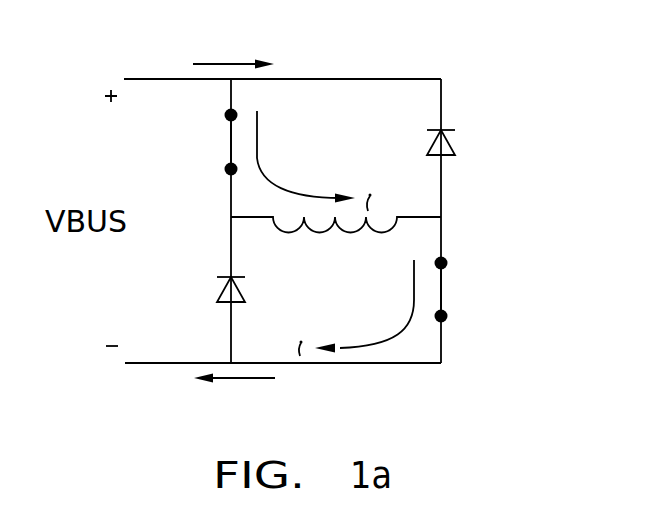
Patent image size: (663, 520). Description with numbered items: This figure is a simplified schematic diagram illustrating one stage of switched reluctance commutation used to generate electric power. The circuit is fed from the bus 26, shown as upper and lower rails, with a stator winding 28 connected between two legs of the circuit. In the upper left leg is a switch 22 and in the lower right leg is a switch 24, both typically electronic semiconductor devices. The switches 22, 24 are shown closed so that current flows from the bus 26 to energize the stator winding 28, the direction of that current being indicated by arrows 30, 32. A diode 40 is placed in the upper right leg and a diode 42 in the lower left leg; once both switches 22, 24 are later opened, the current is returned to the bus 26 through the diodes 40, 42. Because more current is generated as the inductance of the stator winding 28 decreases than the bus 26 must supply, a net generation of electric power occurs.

The switch 22 is at (229, 150).
The switch 24 is at (442, 291).
The bus 26 is at (147, 79).
The stator winding 28 is at (378, 235).
The arrow 30 is at (257, 124).
The arrow 32 is at (380, 348).
The diode 40 is at (445, 142).
The diode 42 is at (218, 292).